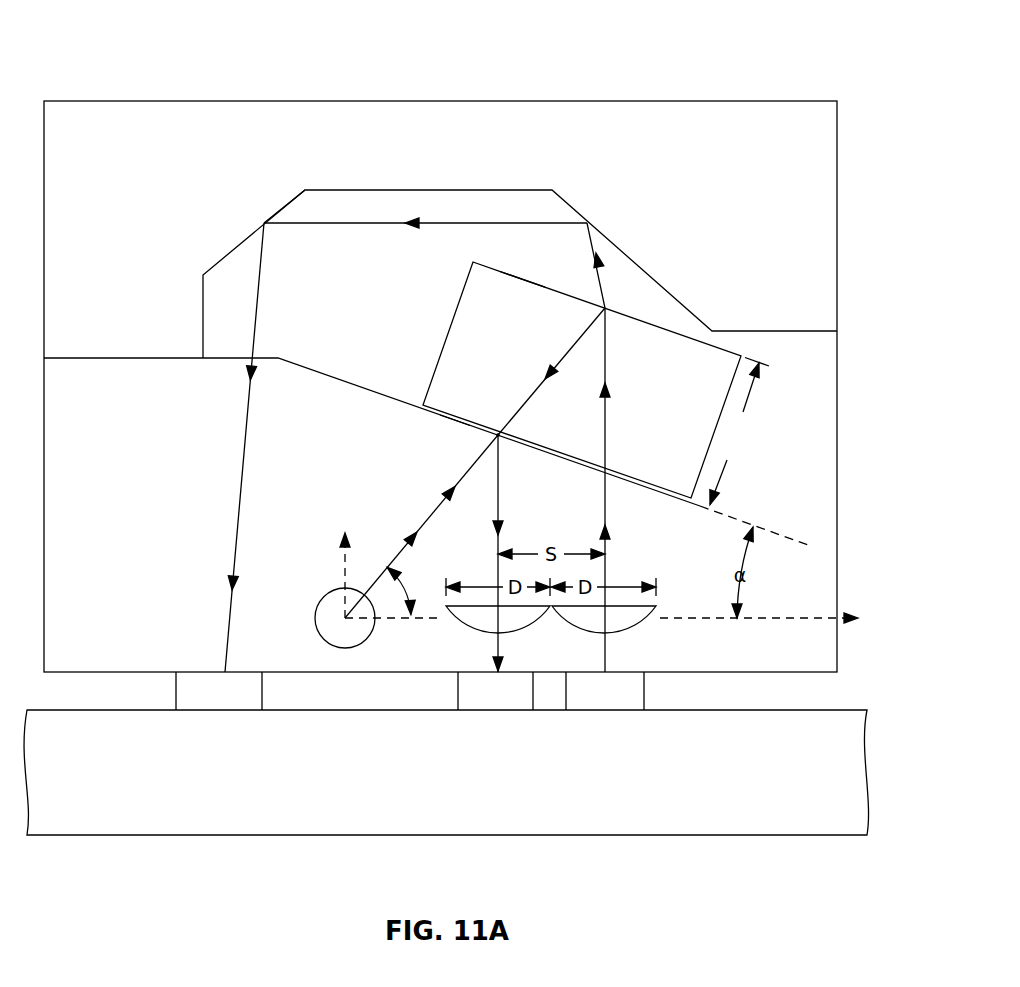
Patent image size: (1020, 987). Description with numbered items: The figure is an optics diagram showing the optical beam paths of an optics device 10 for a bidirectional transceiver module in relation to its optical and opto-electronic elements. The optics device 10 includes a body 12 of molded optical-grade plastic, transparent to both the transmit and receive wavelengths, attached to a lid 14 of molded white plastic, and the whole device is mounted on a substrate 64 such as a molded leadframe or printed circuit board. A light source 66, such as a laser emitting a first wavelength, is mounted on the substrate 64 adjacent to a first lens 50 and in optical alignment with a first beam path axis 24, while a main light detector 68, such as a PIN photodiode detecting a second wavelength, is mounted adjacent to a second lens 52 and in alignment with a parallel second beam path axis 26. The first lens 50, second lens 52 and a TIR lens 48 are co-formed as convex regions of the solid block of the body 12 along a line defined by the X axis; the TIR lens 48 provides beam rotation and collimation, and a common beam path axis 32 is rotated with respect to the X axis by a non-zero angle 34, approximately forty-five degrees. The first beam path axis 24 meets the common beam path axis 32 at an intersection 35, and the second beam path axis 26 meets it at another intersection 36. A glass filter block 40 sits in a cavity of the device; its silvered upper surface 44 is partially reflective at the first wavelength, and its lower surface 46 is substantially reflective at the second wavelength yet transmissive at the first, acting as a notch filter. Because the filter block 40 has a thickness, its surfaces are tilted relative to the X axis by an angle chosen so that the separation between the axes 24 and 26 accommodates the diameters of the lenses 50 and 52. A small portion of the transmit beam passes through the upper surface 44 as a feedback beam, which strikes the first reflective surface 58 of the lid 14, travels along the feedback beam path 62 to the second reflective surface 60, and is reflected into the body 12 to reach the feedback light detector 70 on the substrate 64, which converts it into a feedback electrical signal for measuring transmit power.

The optics device 10 is at (100, 59).
The body 12 is at (838, 489).
The lid 14 is at (838, 214).
The first beam path axis 24 is at (608, 510).
The second beam path axis 26 is at (501, 510).
The common beam path axis 32 is at (436, 509).
The angle 34 is at (404, 588).
The intersection 35 is at (608, 306).
The intersection 36 is at (501, 437).
The filter block 40 is at (449, 322).
The upper surface 44 is at (524, 264).
The lower surface 46 is at (448, 435).
The TIR lens 48 is at (327, 601).
The first lens 50 is at (651, 623).
The second lens 52 is at (466, 630).
The first reflective surface 58 is at (562, 207).
The second reflective surface 60 is at (294, 209).
The feedback beam path 62 is at (236, 439).
The substrate 64 is at (578, 836).
The light source 66 is at (645, 688).
The main light detector 68 is at (457, 690).
The feedback light detector 70 is at (264, 690).